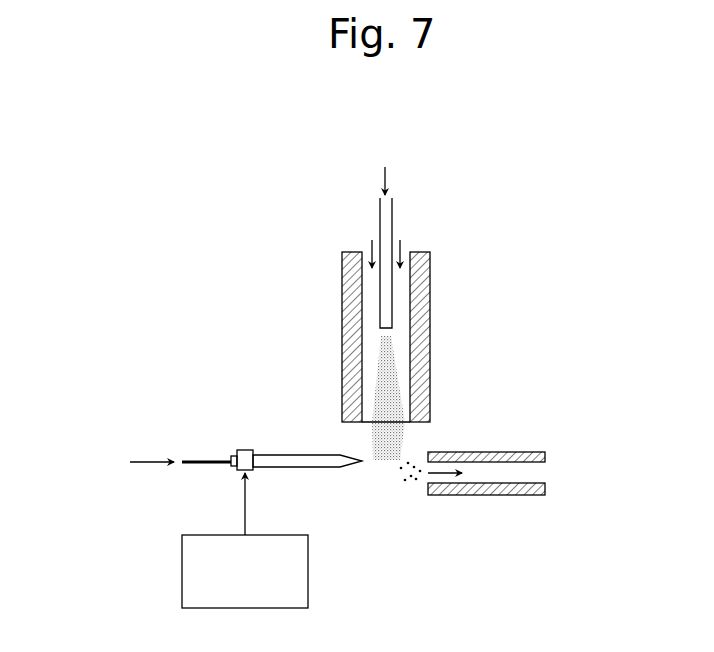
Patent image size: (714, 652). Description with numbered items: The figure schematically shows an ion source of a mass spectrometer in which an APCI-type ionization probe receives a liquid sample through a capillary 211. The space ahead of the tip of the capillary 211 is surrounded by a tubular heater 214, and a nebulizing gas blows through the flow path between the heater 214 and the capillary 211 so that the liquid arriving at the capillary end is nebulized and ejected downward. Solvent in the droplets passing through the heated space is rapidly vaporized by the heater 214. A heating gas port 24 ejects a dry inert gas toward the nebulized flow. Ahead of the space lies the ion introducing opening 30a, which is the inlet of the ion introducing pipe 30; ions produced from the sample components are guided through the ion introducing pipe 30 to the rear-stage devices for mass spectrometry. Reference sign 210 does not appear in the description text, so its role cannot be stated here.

The nebulizer ionization probe 210 is at (277, 239).
The capillary 211 is at (377, 300).
The heater 214 is at (343, 345).
The heating gas port 24 is at (291, 455).
The ion introducing pipe 30 is at (495, 452).
The ion introducing opening 30a is at (426, 488).